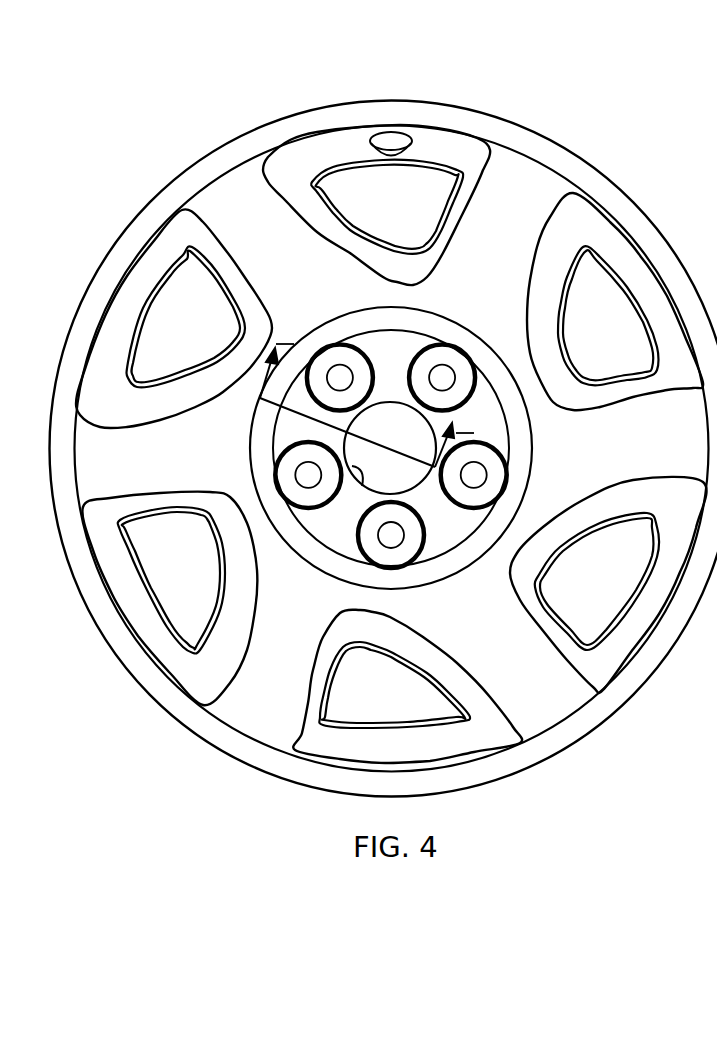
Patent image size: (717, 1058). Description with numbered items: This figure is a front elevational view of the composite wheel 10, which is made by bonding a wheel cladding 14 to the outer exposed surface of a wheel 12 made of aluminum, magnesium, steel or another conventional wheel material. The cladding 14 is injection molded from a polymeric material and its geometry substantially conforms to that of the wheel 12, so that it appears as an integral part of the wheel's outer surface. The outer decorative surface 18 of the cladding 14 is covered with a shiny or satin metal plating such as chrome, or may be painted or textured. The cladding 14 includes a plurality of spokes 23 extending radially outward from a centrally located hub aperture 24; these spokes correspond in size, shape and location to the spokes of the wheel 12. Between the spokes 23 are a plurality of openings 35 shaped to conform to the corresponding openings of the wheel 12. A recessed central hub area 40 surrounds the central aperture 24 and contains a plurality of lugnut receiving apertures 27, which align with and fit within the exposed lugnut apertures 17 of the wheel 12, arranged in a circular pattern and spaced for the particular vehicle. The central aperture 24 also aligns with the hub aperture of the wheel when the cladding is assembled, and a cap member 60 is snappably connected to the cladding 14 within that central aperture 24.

The composite wheel 10 is at (358, 450).
The wheel 12 is at (610, 178).
The wheel cladding 14 is at (623, 232).
The lugnut apertures 17 is at (475, 472).
The outer decorative surface 18 is at (509, 247).
The spokes 23 is at (263, 207).
The hub aperture 24 is at (362, 492).
The lugnut receiving apertures 27 is at (385, 447).
The openings 35 is at (430, 172).
The recessed central hub area 40 is at (507, 432).
The cap member 60 is at (537, 430).